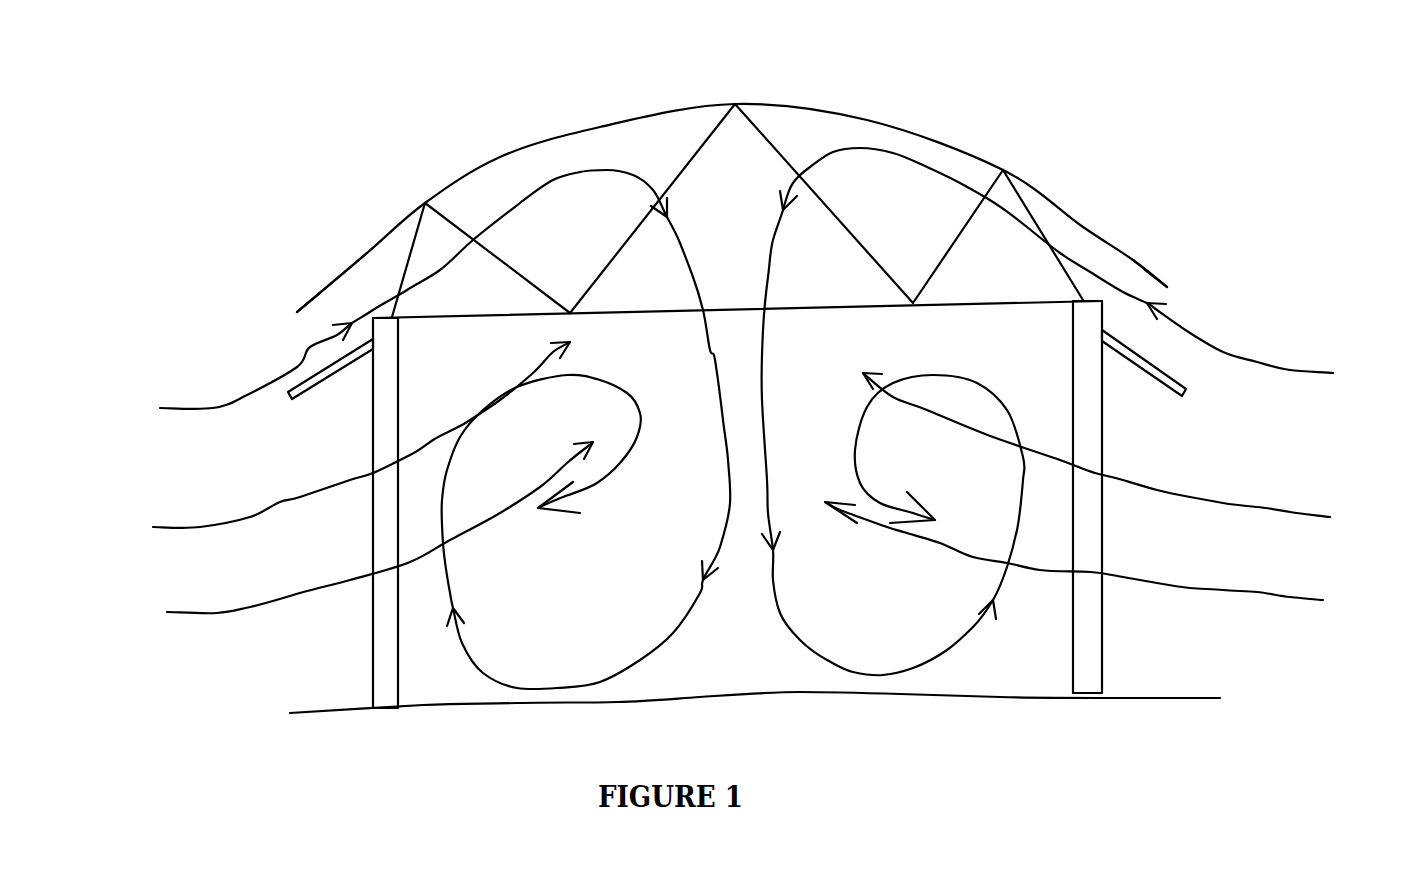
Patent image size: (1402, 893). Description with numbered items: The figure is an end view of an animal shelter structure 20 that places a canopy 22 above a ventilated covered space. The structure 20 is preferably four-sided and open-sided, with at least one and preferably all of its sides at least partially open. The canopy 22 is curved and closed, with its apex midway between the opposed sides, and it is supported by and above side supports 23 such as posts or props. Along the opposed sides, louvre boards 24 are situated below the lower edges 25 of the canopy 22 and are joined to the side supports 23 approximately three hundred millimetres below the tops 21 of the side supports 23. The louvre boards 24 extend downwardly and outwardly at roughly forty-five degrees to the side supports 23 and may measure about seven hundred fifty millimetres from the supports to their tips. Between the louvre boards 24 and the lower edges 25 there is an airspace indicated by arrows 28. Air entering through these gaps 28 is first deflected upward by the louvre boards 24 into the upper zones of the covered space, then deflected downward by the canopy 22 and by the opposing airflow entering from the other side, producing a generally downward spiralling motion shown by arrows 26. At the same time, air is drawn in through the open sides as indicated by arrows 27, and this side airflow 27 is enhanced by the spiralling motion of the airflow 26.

The shelter structure 20 is at (314, 180).
The tops of the side supports 21 is at (387, 328).
The canopy 22 is at (960, 140).
The side supports 23 is at (380, 643).
The louvre boards 24 is at (307, 397).
The lower edges of the canopy 25 is at (302, 303).
The arrows indicating spiralling airflow 26 is at (742, 418).
The arrows indicating side airflow 27 is at (741, 489).
The airspace gaps 28 is at (323, 313).